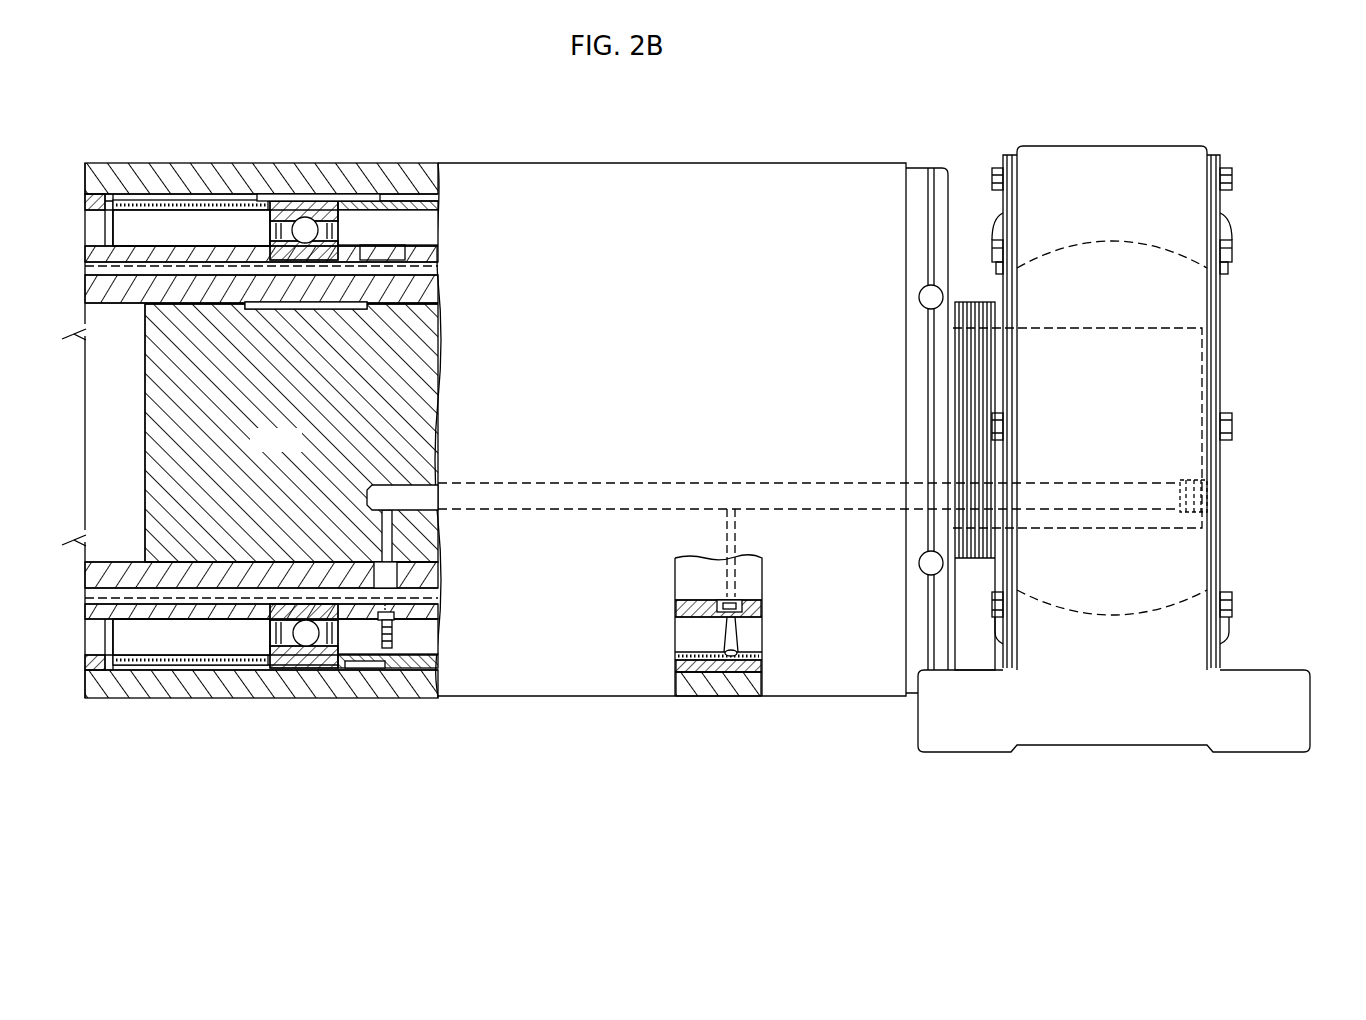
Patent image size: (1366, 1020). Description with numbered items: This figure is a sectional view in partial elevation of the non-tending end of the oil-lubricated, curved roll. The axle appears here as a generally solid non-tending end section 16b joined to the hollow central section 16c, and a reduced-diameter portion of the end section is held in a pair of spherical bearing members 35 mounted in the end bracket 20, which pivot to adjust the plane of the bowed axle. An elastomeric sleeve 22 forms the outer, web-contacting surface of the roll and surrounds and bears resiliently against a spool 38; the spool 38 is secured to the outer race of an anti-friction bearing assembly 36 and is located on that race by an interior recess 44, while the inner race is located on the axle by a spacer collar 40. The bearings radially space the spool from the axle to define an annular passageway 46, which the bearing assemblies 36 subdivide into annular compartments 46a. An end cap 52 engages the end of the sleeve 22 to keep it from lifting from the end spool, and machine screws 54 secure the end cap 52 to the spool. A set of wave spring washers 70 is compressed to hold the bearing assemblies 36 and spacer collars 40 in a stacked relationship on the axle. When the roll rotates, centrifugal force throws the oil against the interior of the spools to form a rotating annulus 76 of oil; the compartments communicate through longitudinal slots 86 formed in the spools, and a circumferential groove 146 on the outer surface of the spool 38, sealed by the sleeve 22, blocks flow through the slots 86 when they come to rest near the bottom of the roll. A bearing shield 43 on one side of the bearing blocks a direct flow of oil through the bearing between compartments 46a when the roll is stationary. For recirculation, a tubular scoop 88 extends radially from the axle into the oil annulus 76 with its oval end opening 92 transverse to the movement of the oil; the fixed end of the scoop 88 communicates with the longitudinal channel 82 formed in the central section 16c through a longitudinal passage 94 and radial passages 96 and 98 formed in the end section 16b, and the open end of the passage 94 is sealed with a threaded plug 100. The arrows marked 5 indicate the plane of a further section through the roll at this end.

The spool 38 is at (66, 193).
The annular passageway 46 is at (176, 208).
The annular compartments 46a is at (436, 237).
The spacer collars 40 is at (191, 228).
The anti-friction bearing assemblies 36 is at (262, 235).
The annulus of oil 76 is at (230, 204).
The longitudinally extending slots 86 is at (288, 197).
The interior recess 44 is at (347, 205).
The circumferential groove 146 is at (374, 200).
The elastomeric sleeve 22 is at (468, 163).
The end cap 52 is at (940, 168).
The machine screws 54 is at (920, 302).
The wave spring washers 70 is at (966, 302).
The end bracket 20 is at (1146, 146).
The spherical bearing members 35 is at (1095, 244).
The non-tending end section 16b is at (272, 445).
The hollow central section 16c is at (128, 304).
The longitudinal passage 94 is at (604, 483).
The radial passage 96 is at (738, 538).
The radial passage 98 is at (388, 546).
The threaded plug 100 is at (1192, 480).
The scoop 88 is at (724, 639).
The oval end opening 92 is at (730, 697).
The longitudinal channel 82 is at (141, 600).
The bearing shield 43 is at (268, 633).
The section line 5- 5 is at (1362, 133).